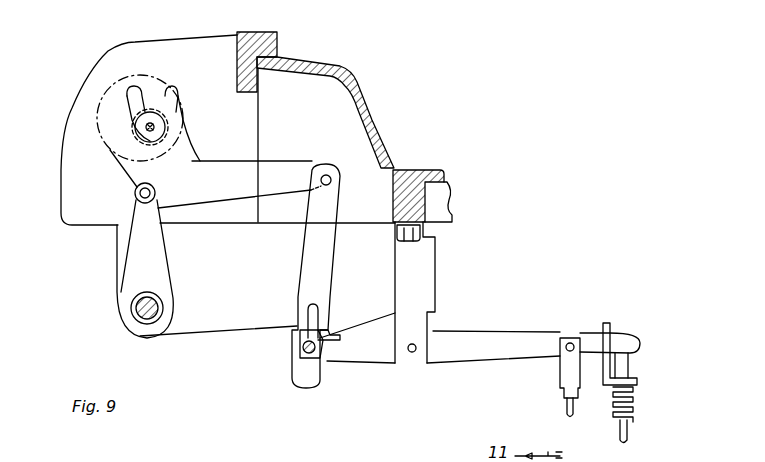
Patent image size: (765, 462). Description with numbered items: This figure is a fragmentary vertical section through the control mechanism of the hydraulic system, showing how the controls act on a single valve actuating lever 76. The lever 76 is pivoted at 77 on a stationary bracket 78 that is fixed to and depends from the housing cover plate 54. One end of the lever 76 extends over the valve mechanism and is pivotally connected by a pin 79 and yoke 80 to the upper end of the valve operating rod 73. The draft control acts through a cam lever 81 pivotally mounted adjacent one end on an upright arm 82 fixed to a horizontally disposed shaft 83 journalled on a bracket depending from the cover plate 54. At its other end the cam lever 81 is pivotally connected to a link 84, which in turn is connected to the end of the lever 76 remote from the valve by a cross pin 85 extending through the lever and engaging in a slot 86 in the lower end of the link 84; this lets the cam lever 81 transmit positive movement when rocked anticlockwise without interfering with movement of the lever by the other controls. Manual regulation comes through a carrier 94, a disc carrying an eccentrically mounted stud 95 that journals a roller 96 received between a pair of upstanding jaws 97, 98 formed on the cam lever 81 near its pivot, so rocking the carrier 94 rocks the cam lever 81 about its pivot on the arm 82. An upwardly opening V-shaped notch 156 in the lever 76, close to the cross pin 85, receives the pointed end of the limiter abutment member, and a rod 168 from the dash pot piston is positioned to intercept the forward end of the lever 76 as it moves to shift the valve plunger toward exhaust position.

The carrier 94 is at (98, 105).
The upstanding jaw 97 is at (128, 87).
The upstanding jaw 98 is at (178, 87).
The roller 96 is at (160, 118).
The stud 95 is at (155, 127).
The housing cover plate 54 is at (375, 108).
The cam lever 81 is at (281, 167).
The upright arm 82 is at (133, 253).
The shaft 83 is at (135, 306).
The link 84 is at (310, 252).
The slot 86 is at (305, 307).
The cross pin 85 is at (305, 344).
The V-shaped notch 156 is at (322, 340).
The stationary bracket 78 is at (440, 270).
The pivot 77 is at (412, 352).
The valve actuating lever 76 is at (498, 332).
The yoke 80 is at (567, 340).
The pin 79 is at (573, 345).
The valve operating rod 73 is at (567, 406).
The rod 168 is at (628, 363).